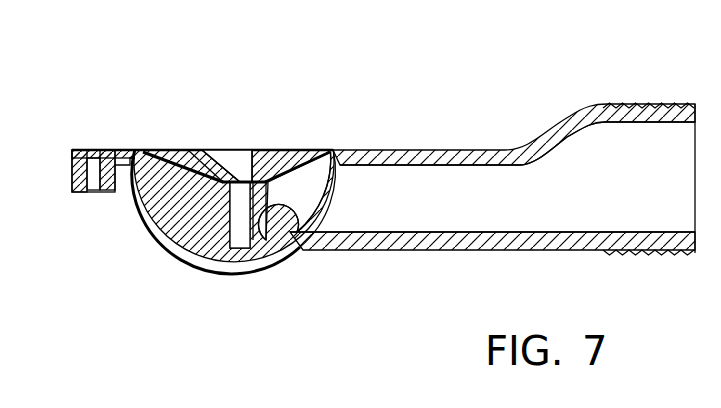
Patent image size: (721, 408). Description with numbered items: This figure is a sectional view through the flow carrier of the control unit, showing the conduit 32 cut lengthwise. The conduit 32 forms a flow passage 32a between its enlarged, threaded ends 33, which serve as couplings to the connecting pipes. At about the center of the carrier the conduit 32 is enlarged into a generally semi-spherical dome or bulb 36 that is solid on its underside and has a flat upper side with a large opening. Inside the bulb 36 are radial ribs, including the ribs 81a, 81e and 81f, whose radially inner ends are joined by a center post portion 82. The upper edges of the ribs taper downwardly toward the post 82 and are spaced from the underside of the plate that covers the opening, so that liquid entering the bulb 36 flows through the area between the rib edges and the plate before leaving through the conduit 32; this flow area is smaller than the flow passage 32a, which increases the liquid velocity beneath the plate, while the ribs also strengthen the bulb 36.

The conduit 32 is at (492, 199).
The flow passage 32a is at (482, 214).
The ends 33 is at (613, 102).
The semi-spherical dome or bulb 36 is at (153, 210).
The radial rib 81a is at (292, 163).
The radial rib 81e is at (150, 167).
The radial rib 81f is at (222, 172).
The center post portion 82 is at (285, 215).